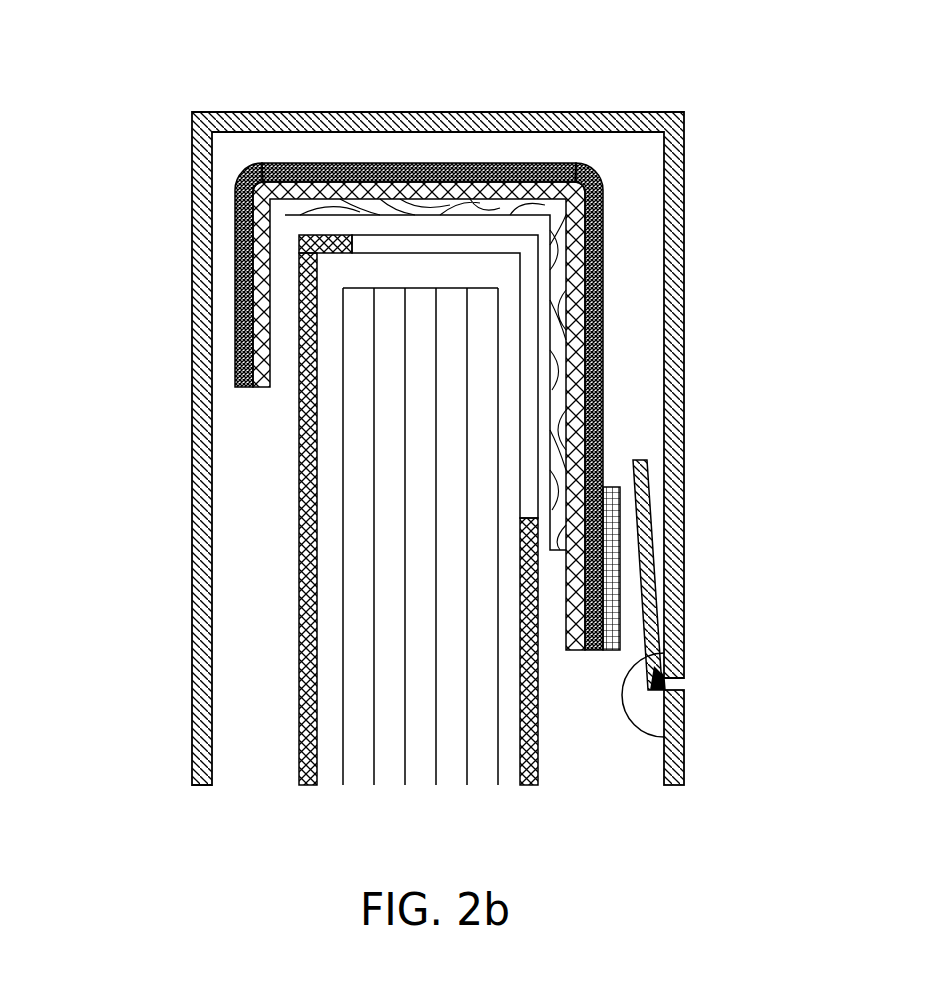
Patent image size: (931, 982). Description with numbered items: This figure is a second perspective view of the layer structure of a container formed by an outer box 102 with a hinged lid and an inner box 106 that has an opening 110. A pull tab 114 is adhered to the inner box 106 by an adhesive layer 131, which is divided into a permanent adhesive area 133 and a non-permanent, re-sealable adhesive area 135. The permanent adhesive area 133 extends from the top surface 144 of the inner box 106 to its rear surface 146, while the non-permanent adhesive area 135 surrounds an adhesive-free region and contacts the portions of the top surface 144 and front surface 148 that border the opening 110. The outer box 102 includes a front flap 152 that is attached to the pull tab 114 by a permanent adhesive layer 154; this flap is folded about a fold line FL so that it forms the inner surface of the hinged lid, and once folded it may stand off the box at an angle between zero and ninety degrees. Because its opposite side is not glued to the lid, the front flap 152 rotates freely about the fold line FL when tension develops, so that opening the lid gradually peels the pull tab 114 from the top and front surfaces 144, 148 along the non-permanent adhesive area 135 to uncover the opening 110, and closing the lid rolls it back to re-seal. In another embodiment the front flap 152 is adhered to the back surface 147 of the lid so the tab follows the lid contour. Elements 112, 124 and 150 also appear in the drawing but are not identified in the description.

The outer box 102 is at (248, 111).
The inner box 106 is at (317, 434).
The opening 110 is at (428, 233).
The electrode plates 112 is at (343, 668).
The pull tab 114 is at (427, 329).
The insulating layer 124 is at (529, 199).
The adhesive layer 131 is at (565, 652).
The permanent adhesive area 133 is at (245, 310).
The non-permanent adhesive area 135 is at (586, 320).
The top surface 144 is at (316, 233).
The rear surface 146 is at (297, 445).
The back surface 147 is at (662, 202).
The front surface 148 is at (541, 583).
The fibrous layer 150 is at (536, 395).
The front flap 152 is at (657, 518).
The permanent adhesive layer 154 is at (608, 652).
The fold line FL is at (667, 680).